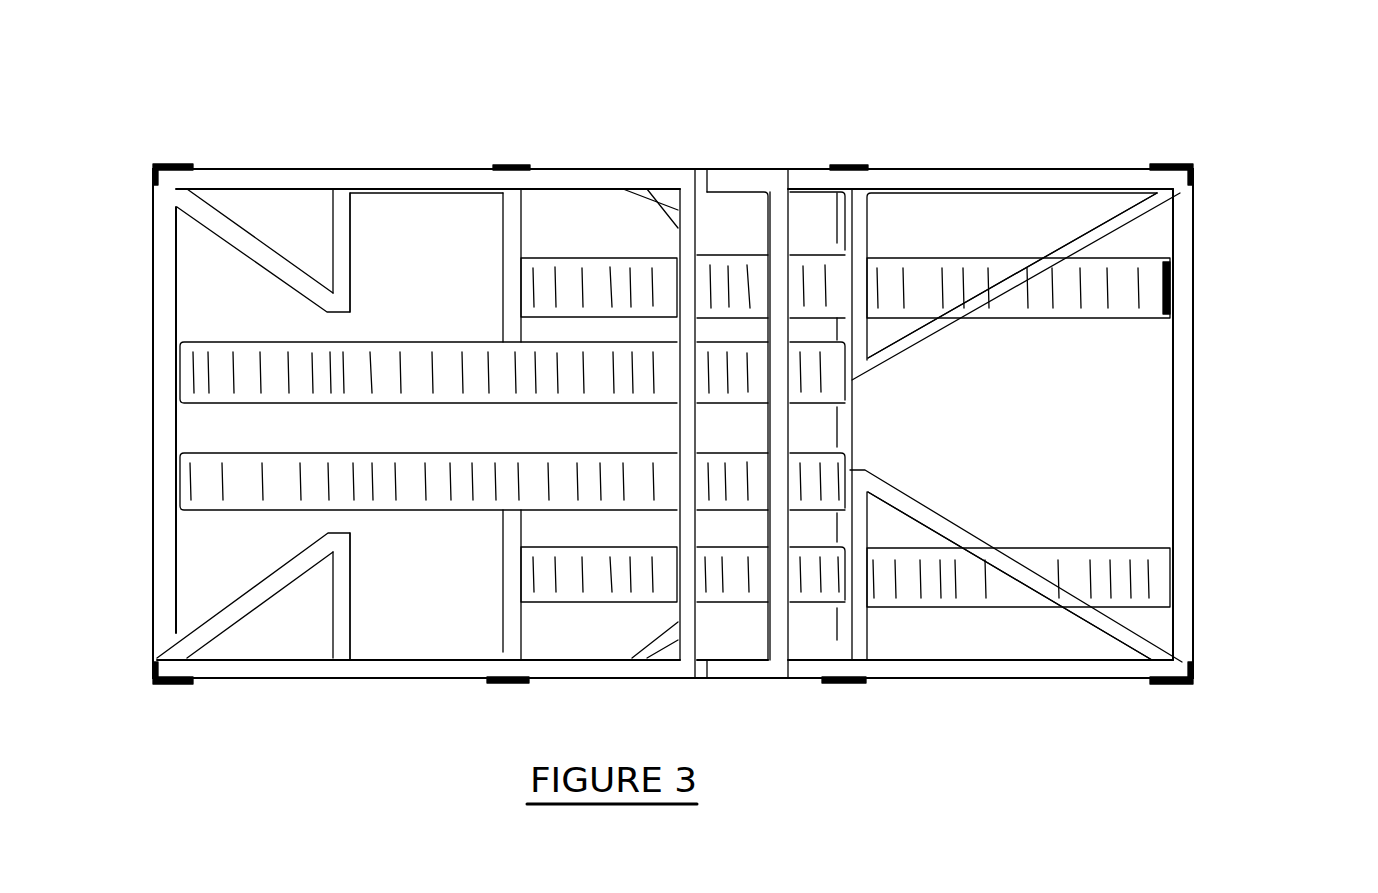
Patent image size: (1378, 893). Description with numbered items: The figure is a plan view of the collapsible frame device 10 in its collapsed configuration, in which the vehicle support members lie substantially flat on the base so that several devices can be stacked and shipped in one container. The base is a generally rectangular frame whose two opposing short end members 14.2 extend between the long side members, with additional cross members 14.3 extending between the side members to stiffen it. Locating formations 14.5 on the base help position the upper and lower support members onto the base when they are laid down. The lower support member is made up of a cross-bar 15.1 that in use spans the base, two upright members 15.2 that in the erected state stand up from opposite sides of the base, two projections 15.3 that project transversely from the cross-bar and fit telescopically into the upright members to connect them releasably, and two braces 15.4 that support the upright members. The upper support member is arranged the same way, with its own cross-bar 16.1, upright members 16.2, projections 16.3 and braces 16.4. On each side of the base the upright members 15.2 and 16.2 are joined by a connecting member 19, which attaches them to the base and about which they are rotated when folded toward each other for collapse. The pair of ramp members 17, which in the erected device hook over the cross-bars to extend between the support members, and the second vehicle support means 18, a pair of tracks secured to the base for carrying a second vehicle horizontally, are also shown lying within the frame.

The collapsible frame device 10 is at (1300, 128).
The short end member 14.2 is at (155, 432).
The cross member 14.3 is at (518, 302).
The locating formation 14.5 is at (163, 165).
The cross-bar 15.1 is at (788, 620).
The upright member 15.2 is at (350, 268).
The projection 15.3 is at (735, 170).
The brace 15.4 is at (267, 267).
The cross-bar 16.1 is at (688, 417).
The upright member 16.2 is at (868, 222).
The projection 16.3 is at (605, 176).
The brace 16.4 is at (940, 345).
The ramp member 17 is at (297, 398).
The second vehicle support means 18 is at (1092, 322).
The connecting member 19 is at (427, 176).